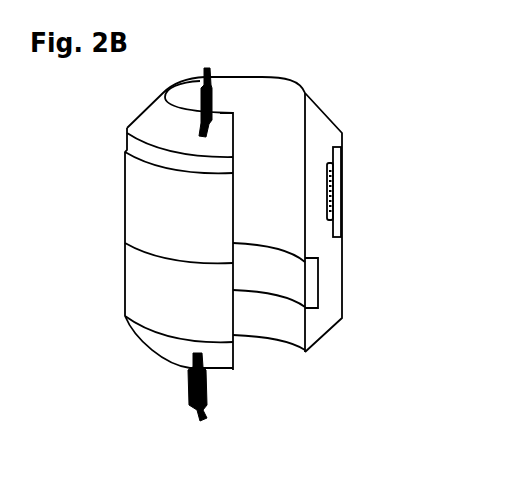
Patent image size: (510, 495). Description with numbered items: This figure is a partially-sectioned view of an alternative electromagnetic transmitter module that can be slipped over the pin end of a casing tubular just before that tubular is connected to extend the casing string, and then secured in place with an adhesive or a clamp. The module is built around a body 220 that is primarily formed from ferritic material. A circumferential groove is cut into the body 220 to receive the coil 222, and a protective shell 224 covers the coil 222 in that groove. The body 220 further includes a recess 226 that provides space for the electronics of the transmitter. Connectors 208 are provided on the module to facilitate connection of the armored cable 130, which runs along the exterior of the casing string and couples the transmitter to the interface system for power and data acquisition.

The armored cable 130 is at (203, 73).
The connector 208 is at (220, 97).
The transmitter module body 220 is at (328, 137).
The coil 222 is at (340, 183).
The protective shell 224 is at (125, 184).
The recess 226 is at (282, 235).